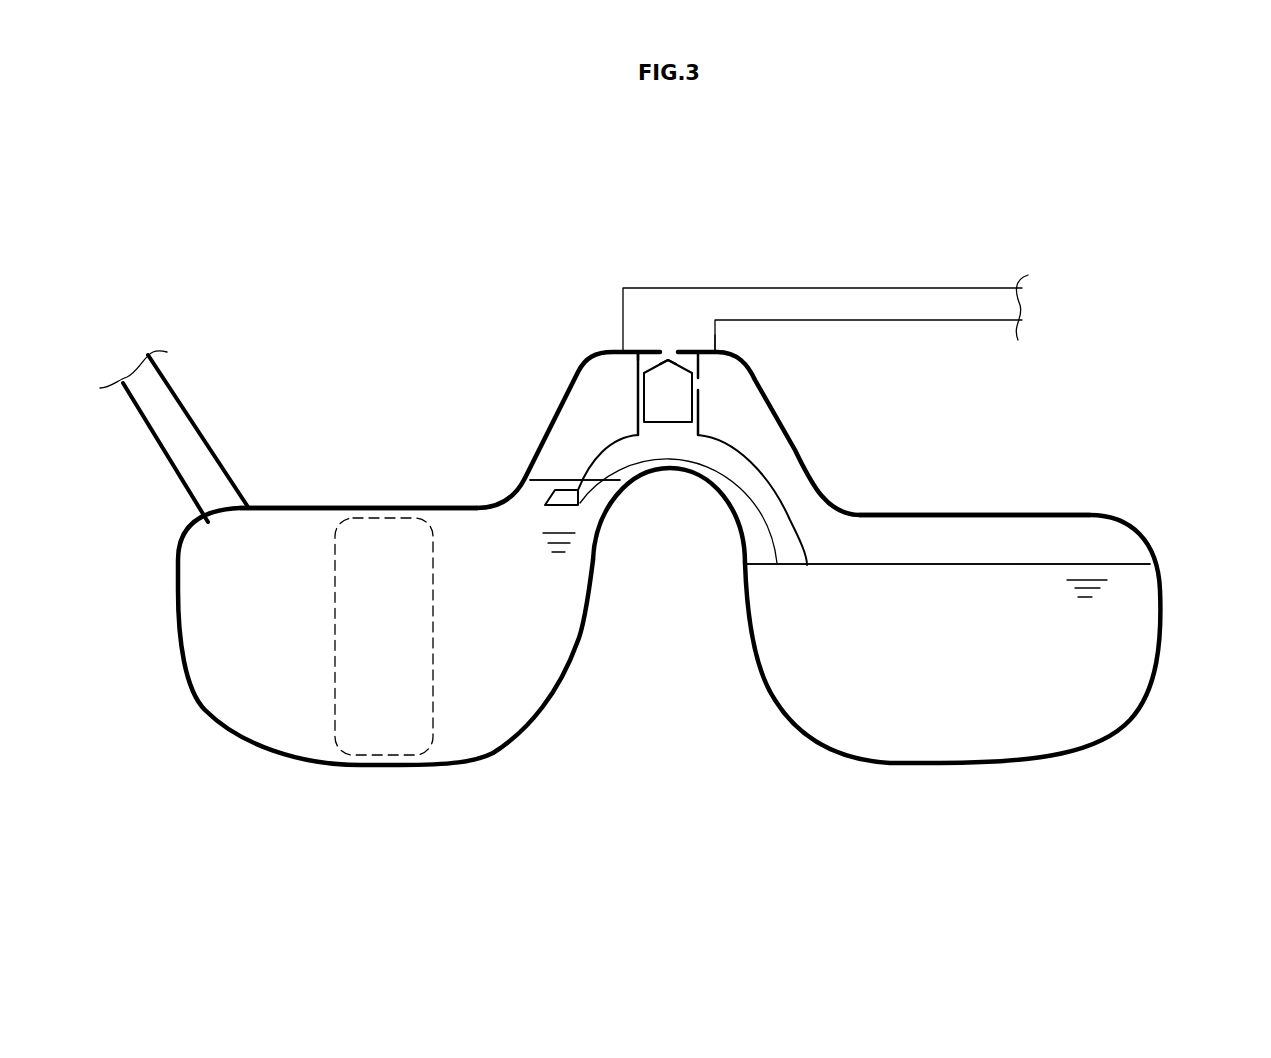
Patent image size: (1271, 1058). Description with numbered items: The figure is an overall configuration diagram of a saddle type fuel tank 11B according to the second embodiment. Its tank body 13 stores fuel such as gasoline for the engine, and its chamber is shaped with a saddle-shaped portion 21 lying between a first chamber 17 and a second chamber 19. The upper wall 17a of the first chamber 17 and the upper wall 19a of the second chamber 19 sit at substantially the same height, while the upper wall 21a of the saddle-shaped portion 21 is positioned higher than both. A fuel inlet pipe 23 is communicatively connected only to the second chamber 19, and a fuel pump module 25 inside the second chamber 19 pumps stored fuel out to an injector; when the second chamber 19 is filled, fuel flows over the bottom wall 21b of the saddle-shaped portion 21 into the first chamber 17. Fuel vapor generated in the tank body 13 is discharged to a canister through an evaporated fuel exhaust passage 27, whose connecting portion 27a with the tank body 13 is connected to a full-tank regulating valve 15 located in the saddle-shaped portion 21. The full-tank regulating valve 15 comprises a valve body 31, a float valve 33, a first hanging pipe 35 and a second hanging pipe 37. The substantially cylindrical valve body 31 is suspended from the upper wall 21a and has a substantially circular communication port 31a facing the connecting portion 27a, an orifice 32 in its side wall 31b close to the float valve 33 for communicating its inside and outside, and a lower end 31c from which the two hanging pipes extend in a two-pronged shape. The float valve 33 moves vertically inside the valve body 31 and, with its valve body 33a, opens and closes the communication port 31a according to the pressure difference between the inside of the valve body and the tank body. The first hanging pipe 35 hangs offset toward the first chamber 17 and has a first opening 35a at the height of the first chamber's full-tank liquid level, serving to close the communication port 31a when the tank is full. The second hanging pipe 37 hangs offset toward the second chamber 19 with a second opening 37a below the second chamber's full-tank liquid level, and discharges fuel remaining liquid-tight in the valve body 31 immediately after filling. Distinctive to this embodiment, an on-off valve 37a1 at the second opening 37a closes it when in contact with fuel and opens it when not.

The saddle type fuel tank 11B is at (384, 251).
The tank body 13 is at (1067, 387).
The full-tank regulating valve 15 is at (596, 379).
The first chamber 17 is at (1073, 527).
The upper wall 17a is at (1040, 515).
The second chamber 19 is at (283, 520).
The upper wall 19a is at (323, 508).
The saddle-shaped portion 21 is at (712, 417).
The upper wall 21a is at (693, 350).
The bottom wall 21b is at (663, 463).
The fuel inlet pipe 23 is at (158, 403).
The fuel pump module 25 is at (375, 518).
The evaporated fuel exhaust passage 27 is at (862, 308).
The connecting portion 27a is at (717, 350).
The valve body 31 is at (637, 402).
The communication port 31a is at (662, 352).
The side wall 31b is at (703, 402).
The lower end 31c is at (703, 433).
The orifice 32 is at (700, 384).
The float valve 33 is at (657, 387).
The valve body 33a is at (666, 359).
The first hanging pipe 35 is at (743, 463).
The first opening 35a is at (805, 567).
The second hanging pipe 37 is at (590, 467).
The second opening 37a is at (545, 505).
The on-off valve 37a1 is at (568, 497).